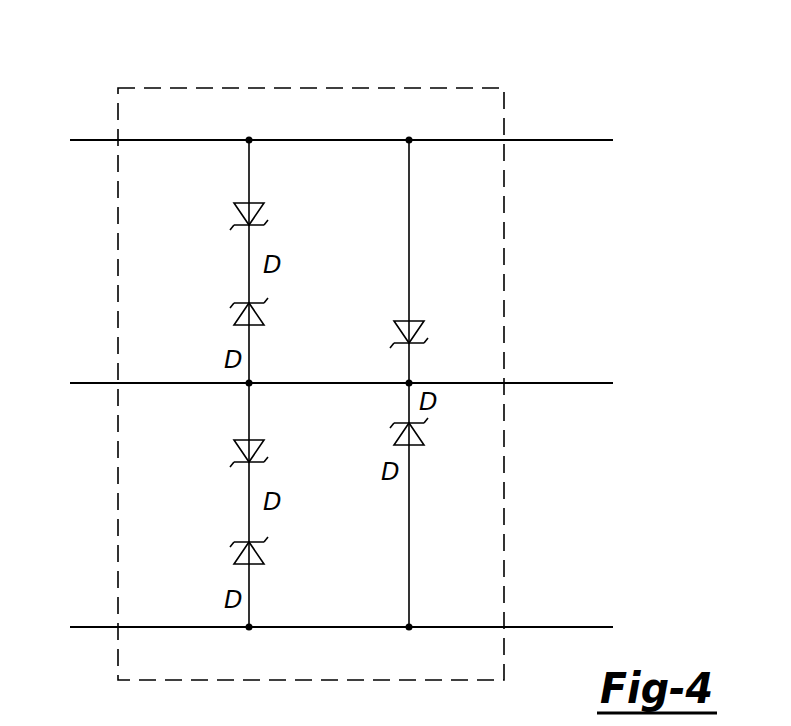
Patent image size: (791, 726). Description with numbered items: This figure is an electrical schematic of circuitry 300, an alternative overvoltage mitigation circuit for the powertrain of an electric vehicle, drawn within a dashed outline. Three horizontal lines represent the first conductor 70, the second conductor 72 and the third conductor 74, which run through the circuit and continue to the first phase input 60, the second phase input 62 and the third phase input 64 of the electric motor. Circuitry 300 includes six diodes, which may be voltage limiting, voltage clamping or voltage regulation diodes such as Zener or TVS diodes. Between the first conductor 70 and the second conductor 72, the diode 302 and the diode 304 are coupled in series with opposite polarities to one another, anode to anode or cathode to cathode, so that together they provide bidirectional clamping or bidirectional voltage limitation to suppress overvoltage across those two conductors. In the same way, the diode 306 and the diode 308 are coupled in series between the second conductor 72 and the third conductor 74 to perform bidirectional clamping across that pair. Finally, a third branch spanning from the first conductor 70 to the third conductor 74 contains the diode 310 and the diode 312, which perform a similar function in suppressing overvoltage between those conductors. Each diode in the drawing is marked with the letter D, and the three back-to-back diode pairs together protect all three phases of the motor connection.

The circuitry 300 is at (400, 82).
The first conductor 70 is at (90, 133).
The second conductor 72 is at (90, 376).
The third conductor 74 is at (90, 620).
The first phase input 60 is at (590, 133).
The second phase input 62 is at (590, 376).
The third phase input 64 is at (590, 620).
The diode 302 is at (240, 213).
The diode 304 is at (240, 316).
The diode 306 is at (240, 452).
The diode 308 is at (240, 555).
The diode 310 is at (400, 333).
The diode 312 is at (400, 436).